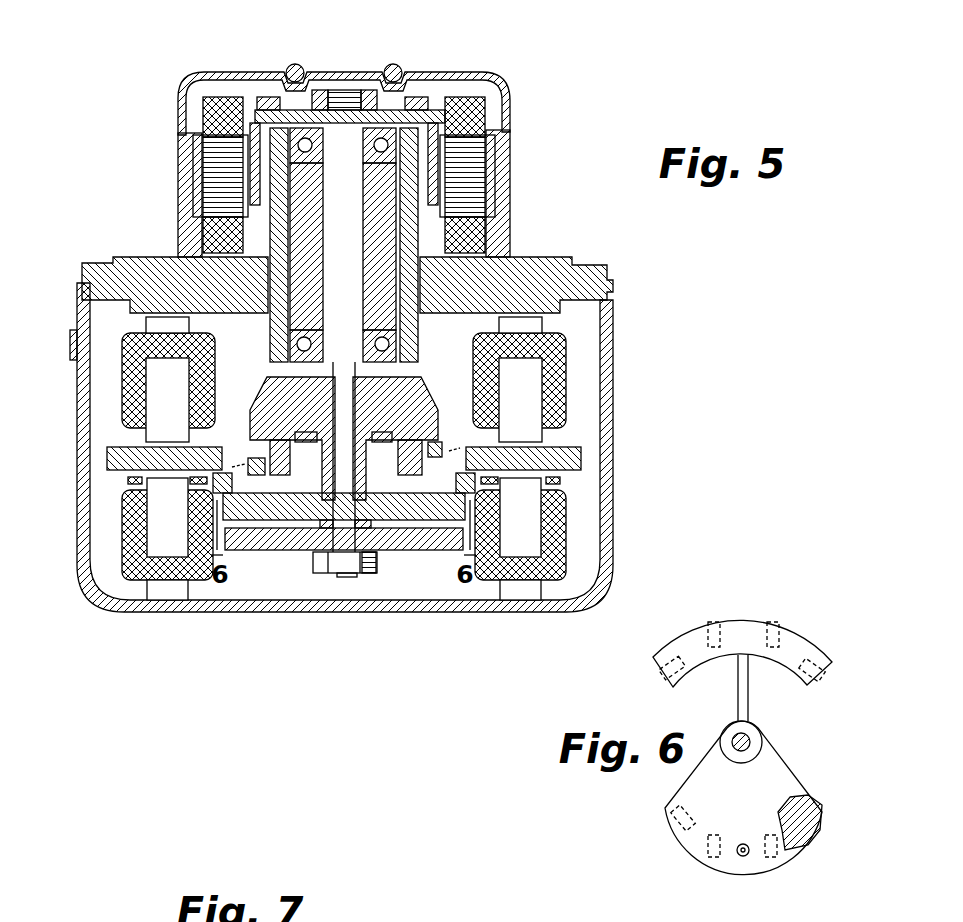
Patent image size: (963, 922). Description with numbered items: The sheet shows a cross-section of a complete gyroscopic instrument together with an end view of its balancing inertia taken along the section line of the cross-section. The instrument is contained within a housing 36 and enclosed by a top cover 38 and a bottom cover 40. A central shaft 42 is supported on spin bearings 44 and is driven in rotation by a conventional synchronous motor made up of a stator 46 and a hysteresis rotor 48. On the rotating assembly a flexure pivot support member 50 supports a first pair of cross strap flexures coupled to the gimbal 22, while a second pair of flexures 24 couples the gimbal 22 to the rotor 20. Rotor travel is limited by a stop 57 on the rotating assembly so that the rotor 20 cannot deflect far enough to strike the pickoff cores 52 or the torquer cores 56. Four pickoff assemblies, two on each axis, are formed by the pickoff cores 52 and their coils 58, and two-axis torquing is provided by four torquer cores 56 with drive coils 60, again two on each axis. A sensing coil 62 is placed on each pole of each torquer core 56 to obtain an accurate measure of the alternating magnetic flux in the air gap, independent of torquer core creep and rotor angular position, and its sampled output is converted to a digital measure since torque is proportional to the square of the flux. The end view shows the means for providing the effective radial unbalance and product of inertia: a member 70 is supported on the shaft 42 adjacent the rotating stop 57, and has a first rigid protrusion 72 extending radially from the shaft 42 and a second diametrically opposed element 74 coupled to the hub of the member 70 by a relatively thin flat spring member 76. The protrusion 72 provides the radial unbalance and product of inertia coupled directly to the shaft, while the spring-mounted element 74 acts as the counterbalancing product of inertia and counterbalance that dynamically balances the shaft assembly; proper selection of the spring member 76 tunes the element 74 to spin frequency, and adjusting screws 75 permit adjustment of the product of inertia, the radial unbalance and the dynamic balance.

In FIG. 5, the rotor 20 is at (115, 456).
In FIG. 5, the gimbal 22 is at (282, 472).
In FIG. 5, the second pair of flexures 24 is at (256, 458).
In FIG. 5, the housing 36 is at (557, 260).
In FIG. 5, the top cover 38 is at (487, 613).
In FIG. 5, the bottom cover 40 is at (493, 80).
In FIG. 5, the shaft 42 is at (333, 143).
In FIG. 6, the shaft 42 is at (757, 737).
In FIG. 5, the spin bearings 44 is at (368, 143).
In FIG. 5, the stator 46 is at (480, 183).
In FIG. 5, the hysteresis rotor 48 is at (437, 143).
In FIG. 5, the flexure pivot support member 50 is at (418, 390).
In FIG. 5, the pickoff cores 52 is at (155, 435).
In FIG. 5, the torquer cores 56 is at (157, 523).
In FIG. 5, the stop 57 is at (417, 516).
In FIG. 5, the coils 58 is at (132, 377).
In FIG. 5, the drive coils 60 is at (128, 567).
In FIG. 5, the sensing coil 62 is at (128, 480).
In FIG. 6, the member 70 is at (760, 742).
In FIG. 6, the first rigid protrusion 72 is at (688, 845).
In FIG. 6, the second diametrically opposed element 74 is at (750, 624).
In FIG. 6, the adjusting screws 75 is at (817, 810).
In FIG. 6, the flat spring member 76 is at (750, 700).